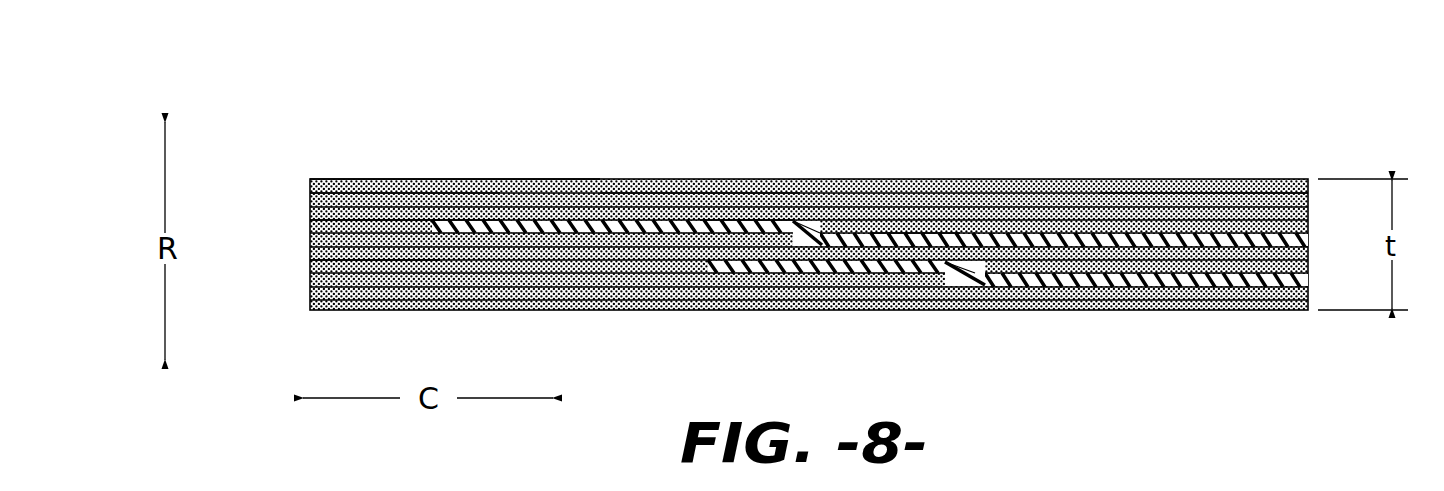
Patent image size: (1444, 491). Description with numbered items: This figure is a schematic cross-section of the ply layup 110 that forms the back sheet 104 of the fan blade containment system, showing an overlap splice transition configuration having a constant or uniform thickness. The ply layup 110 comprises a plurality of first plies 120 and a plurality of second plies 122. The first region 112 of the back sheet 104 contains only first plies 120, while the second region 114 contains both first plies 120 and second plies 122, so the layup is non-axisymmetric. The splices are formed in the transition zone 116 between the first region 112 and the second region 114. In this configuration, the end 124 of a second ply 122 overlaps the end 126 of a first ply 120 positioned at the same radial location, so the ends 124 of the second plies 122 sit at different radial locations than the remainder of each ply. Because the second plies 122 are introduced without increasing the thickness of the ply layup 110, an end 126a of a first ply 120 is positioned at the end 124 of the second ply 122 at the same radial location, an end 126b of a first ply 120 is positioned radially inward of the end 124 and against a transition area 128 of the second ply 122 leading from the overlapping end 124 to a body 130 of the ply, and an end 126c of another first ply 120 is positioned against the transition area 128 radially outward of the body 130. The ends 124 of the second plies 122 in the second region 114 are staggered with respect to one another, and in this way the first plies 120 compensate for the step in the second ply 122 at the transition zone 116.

The back sheet 104 is at (412, 106).
The ply layup 110 is at (488, 290).
The first region 112 is at (358, 130).
The second region 114 is at (1207, 138).
The transition zone 116 is at (627, 117).
The first plies 120 is at (323, 264).
The second plies 122 is at (1172, 238).
The end of second ply 124 is at (470, 225).
The end of first ply 126 is at (670, 261).
The end of first ply 126a is at (378, 226).
The end of first ply 126b is at (716, 225).
The end of another first ply 126c is at (910, 224).
The transition area 128 is at (820, 223).
The body 130 is at (1050, 240).